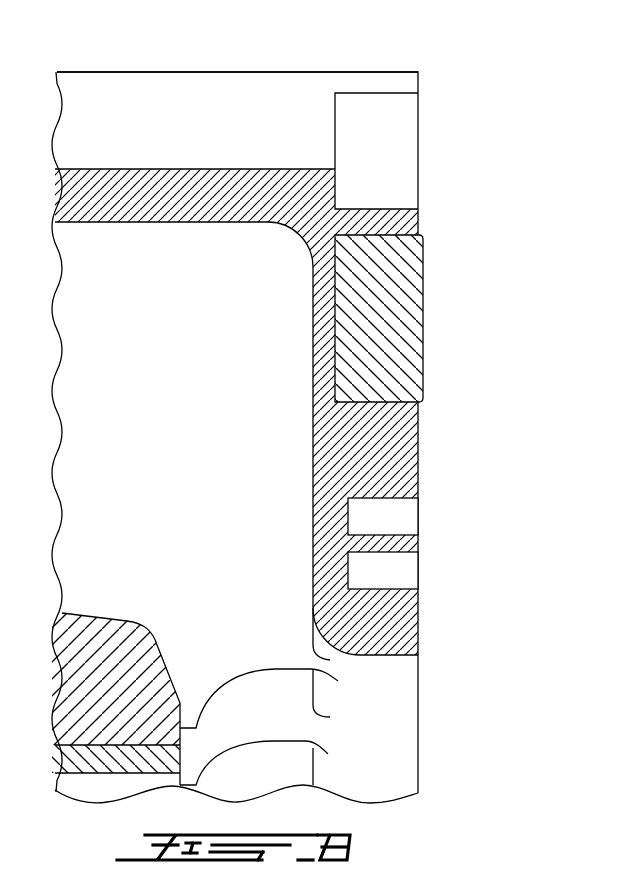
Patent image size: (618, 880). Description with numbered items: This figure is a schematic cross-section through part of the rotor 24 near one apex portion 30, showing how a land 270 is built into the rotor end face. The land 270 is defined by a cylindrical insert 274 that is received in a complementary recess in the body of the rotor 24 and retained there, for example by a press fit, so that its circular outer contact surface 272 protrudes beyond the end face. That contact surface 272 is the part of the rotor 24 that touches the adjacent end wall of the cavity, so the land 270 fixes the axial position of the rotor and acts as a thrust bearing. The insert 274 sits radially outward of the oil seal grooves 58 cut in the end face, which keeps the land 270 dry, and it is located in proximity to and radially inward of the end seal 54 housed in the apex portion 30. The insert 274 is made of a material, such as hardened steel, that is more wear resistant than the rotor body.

The apex portion 30 is at (390, 68).
The end seal 54 is at (380, 127).
The land 270 is at (457, 301).
The contact surface 272 is at (422, 318).
The cylindrical insert 274 is at (382, 377).
The oil seal groove 58 is at (388, 567).
The rotor 24 is at (405, 622).